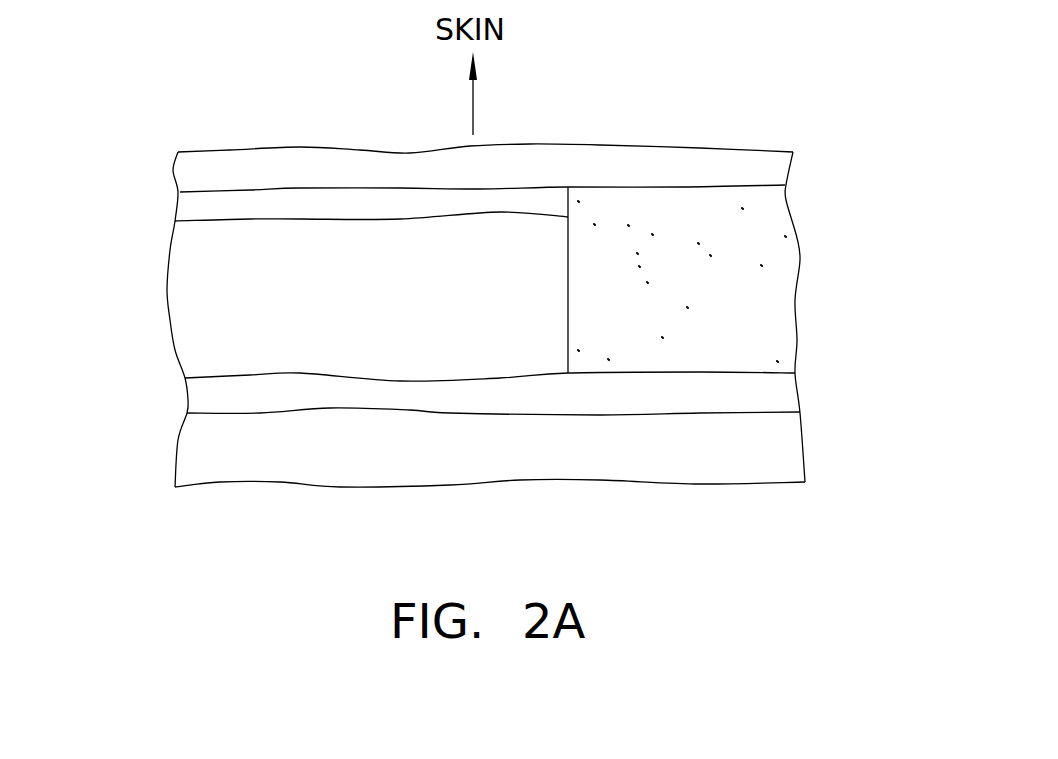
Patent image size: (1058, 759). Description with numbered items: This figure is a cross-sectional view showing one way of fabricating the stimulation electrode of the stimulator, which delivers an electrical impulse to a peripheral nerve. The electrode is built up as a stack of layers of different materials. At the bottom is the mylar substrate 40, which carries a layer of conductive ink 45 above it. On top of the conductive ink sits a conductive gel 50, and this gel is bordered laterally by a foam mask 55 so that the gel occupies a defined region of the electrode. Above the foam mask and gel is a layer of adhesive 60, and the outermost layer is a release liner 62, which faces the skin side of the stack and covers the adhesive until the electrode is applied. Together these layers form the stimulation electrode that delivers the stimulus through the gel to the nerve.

The release liner 62 is at (198, 150).
The layer of adhesive 60 is at (167, 200).
The foam mask 55 is at (167, 268).
The conductive gel 50 is at (798, 238).
The layer of conductive ink 45 is at (805, 383).
The mylar substrate 40 is at (812, 460).